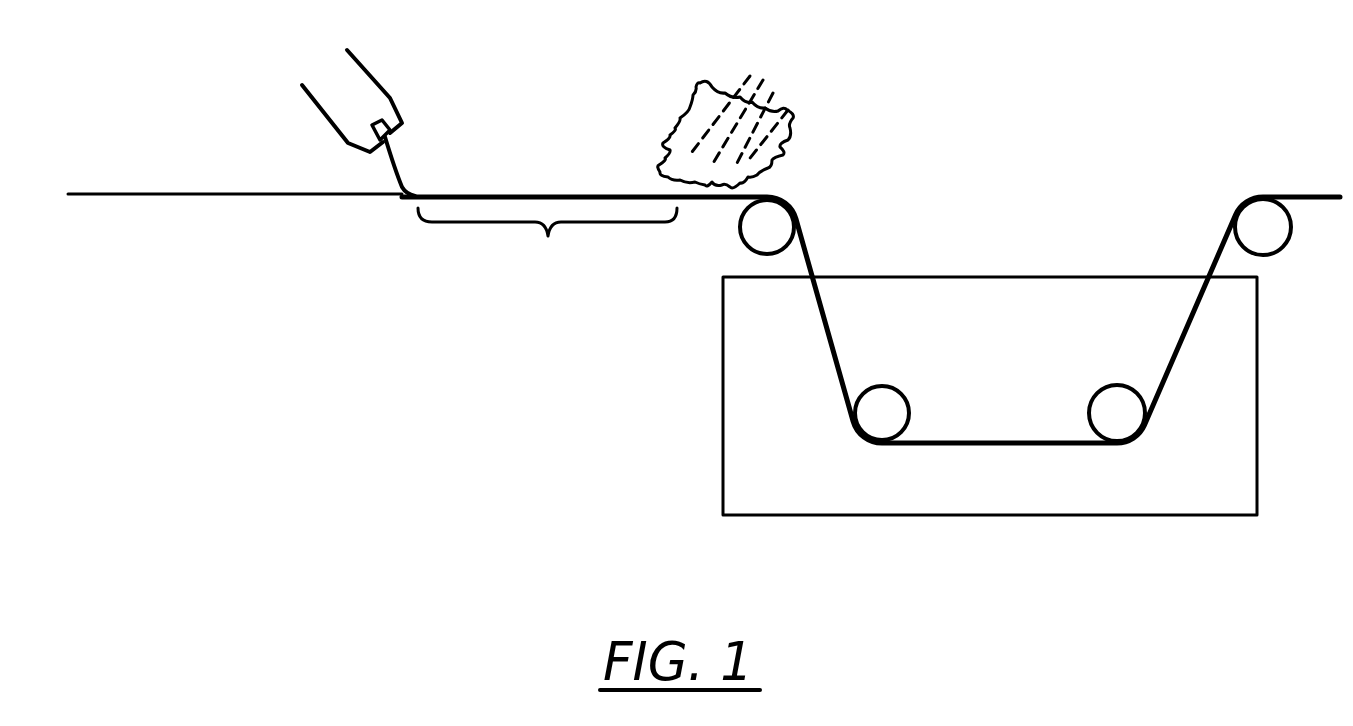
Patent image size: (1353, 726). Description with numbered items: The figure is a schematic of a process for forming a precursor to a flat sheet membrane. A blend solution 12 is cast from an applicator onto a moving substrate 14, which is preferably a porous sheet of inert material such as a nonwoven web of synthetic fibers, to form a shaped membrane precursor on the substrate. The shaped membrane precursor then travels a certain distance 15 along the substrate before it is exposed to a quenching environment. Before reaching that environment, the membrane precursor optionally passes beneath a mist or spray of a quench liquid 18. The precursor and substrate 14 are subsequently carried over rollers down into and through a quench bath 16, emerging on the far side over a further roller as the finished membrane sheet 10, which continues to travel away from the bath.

The membrane sheet 10 is at (1327, 195).
The blend solution 12 is at (402, 158).
The moving substrate 14 is at (298, 197).
The certain distance 15 is at (547, 244).
The quench bath 16 is at (1017, 361).
The mist or spray of quench liquid 18 is at (773, 75).